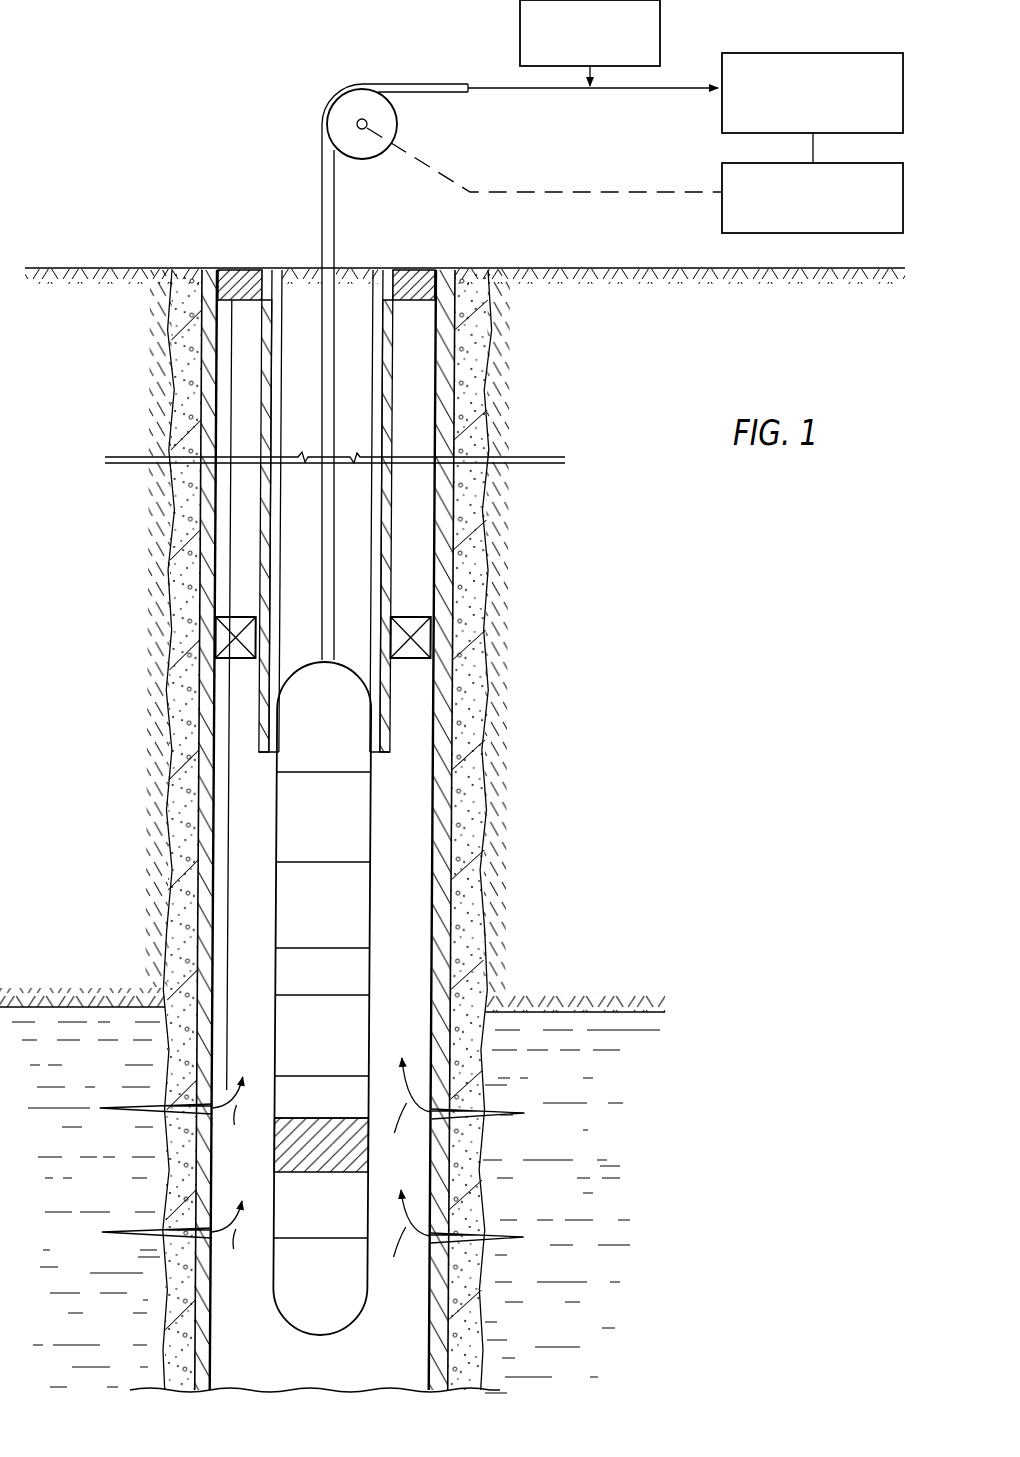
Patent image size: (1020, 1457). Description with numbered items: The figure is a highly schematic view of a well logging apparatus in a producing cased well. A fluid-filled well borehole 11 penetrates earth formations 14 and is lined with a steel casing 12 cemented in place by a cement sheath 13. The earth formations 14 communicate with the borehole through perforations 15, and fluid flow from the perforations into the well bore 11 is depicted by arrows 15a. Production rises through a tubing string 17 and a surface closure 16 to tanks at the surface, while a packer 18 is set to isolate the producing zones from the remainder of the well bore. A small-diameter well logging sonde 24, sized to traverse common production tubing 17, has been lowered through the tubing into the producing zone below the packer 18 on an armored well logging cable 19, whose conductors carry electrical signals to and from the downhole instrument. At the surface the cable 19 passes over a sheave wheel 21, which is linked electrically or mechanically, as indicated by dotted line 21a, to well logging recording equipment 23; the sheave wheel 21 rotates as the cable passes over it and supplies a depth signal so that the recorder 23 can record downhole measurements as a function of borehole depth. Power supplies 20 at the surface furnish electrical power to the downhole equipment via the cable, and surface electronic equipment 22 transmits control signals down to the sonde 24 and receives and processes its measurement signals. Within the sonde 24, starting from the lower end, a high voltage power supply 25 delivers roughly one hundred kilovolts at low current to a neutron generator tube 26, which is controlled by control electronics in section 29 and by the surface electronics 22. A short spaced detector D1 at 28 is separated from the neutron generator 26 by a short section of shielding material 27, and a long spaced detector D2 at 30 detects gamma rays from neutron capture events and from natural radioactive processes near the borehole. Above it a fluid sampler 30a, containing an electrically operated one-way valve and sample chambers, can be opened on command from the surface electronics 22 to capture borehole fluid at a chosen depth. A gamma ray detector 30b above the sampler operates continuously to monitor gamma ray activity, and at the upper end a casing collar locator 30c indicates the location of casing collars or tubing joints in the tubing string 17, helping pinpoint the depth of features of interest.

The well borehole 11 is at (410, 905).
The steel casing 12 is at (208, 330).
The cement sheath 13 is at (465, 322).
The earth formations 14 is at (617, 534).
The perforations 15 is at (140, 1110).
The arrows 15a is at (321, 1170).
The surface closure 16 is at (408, 268).
The tubing string 17 is at (385, 405).
The packer 18 is at (418, 640).
The armored well logging cable 19 is at (321, 214).
The power supplies 20 is at (520, 14).
The sheave wheel 21 is at (343, 118).
The dotted line 21a is at (561, 195).
The surface electronic equipment 22 is at (838, 54).
The well logging recording equipment 23 is at (722, 226).
The well logging sonde 24 is at (372, 832).
The high voltage power supply 25 is at (355, 1305).
The neutron generator tube 26 is at (368, 1222).
The shielding material 27 is at (277, 1163).
The short spaced detector D1 28 is at (368, 1088).
The control electronics section 29 is at (277, 1037).
The long spaced detector D2 30 is at (372, 972).
The fluid sampler 30a is at (278, 907).
The gamma ray detector 30b is at (278, 822).
The casing collar locator 30c is at (372, 763).